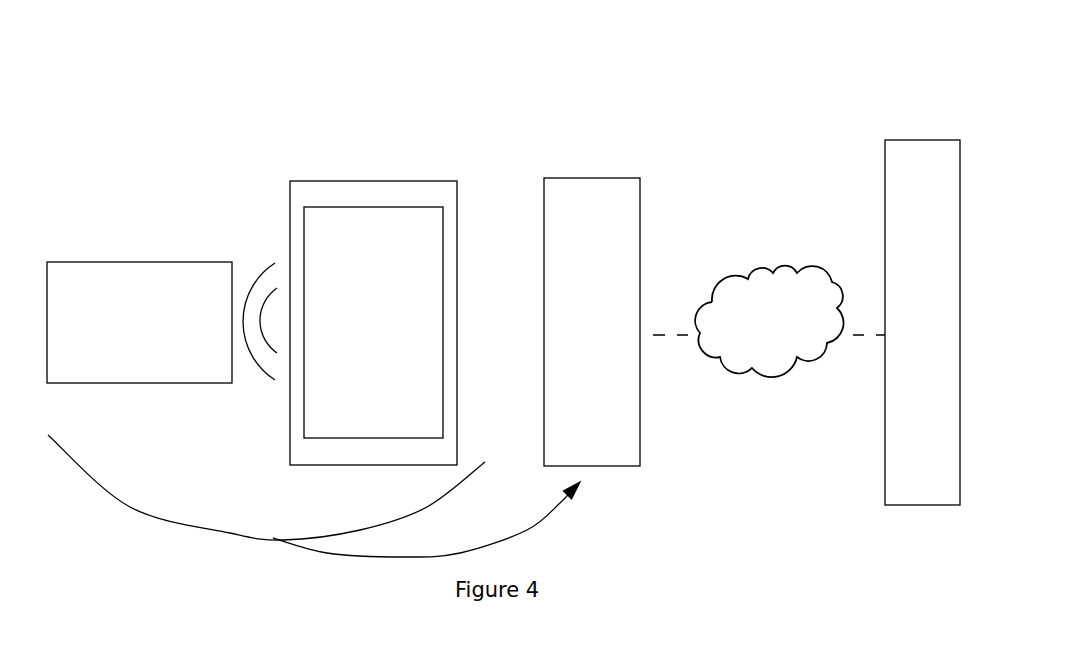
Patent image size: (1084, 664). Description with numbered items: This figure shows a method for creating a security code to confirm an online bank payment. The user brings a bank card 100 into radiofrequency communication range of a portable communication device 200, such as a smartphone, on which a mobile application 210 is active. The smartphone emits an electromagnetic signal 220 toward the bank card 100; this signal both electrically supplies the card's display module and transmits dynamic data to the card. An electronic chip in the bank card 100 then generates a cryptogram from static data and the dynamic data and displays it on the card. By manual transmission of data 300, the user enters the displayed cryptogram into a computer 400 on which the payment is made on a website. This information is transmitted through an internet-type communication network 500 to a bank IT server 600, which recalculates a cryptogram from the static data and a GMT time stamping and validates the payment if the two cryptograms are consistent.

The bank card 100 is at (130, 255).
The portable communication device 200 is at (462, 298).
The mobile application 210 is at (335, 405).
The electromagnetic signal 220 is at (264, 263).
The manual transmission of data by the user 300 is at (417, 562).
The computer 400 is at (557, 166).
The communication network 500 is at (750, 383).
The bank IT server 600 is at (880, 133).